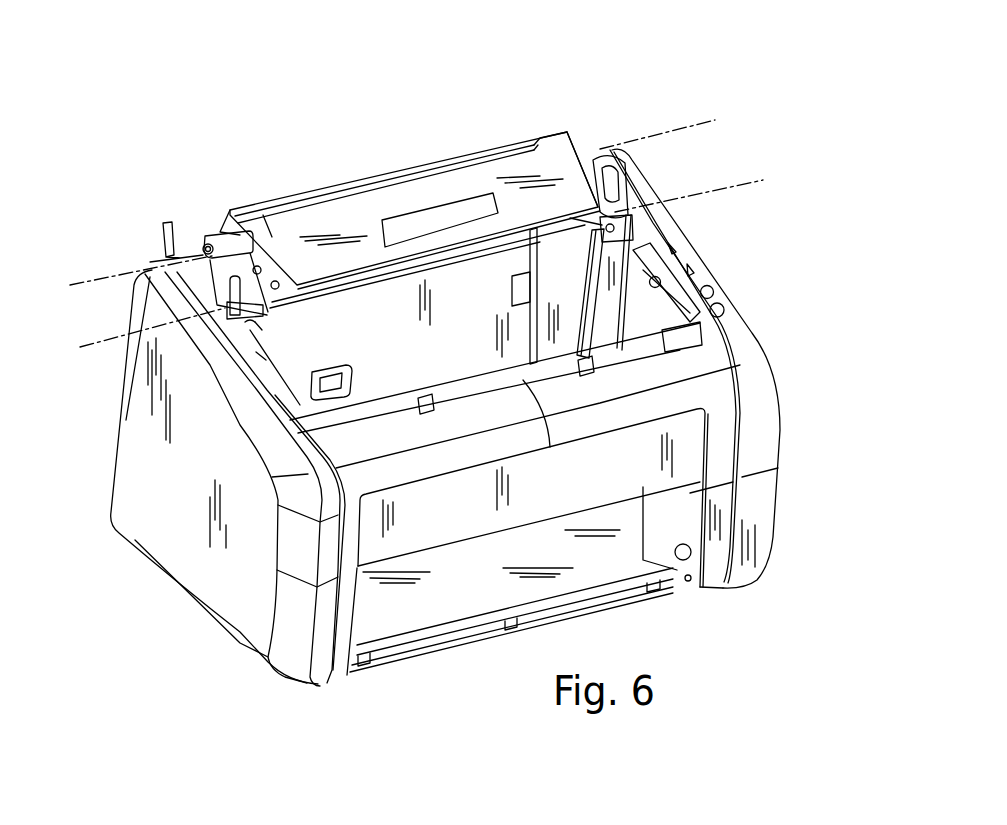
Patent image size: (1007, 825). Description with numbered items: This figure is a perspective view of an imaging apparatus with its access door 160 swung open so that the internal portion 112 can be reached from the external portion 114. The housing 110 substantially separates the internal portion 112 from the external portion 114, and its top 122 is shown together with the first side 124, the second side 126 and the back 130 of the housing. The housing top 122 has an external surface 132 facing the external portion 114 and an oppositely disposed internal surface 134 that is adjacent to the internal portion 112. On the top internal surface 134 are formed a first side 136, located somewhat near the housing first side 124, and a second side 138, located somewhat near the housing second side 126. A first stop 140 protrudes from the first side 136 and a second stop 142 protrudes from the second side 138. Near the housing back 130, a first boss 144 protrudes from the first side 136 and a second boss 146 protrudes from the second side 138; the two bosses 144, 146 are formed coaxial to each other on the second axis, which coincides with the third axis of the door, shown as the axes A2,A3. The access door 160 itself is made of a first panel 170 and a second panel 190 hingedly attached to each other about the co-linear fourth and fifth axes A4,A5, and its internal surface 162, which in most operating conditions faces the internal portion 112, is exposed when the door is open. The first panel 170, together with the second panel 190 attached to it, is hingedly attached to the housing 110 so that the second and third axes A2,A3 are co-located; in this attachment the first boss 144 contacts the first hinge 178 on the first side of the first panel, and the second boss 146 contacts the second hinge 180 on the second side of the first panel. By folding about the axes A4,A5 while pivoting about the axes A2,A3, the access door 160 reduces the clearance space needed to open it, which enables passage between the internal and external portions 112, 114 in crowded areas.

The housing 110 is at (453, 412).
The internal portion 112 is at (445, 342).
The external portion 114 is at (420, 187).
The top 122 is at (640, 198).
The first side 124 is at (193, 499).
The second side 126 is at (778, 433).
The back 130 is at (170, 282).
The external surface 132 is at (737, 340).
The internal surface 134 is at (690, 240).
The first side 136 is at (262, 352).
The second side 138 is at (648, 256).
The first stop 140 is at (297, 390).
The second stop 142 is at (697, 292).
The first boss 144 is at (260, 323).
The second boss 146 is at (620, 210).
The access door 160 is at (402, 161).
The internal surface 162 is at (365, 215).
The first panel 170 is at (575, 146).
The first hinge 178 is at (250, 327).
The second hinge 180 is at (580, 222).
The second panel 190 is at (490, 144).
The second axis and third axis A2,A3 is at (123, 335).
The fourth axis and fifth axis A4,A5 is at (140, 270).